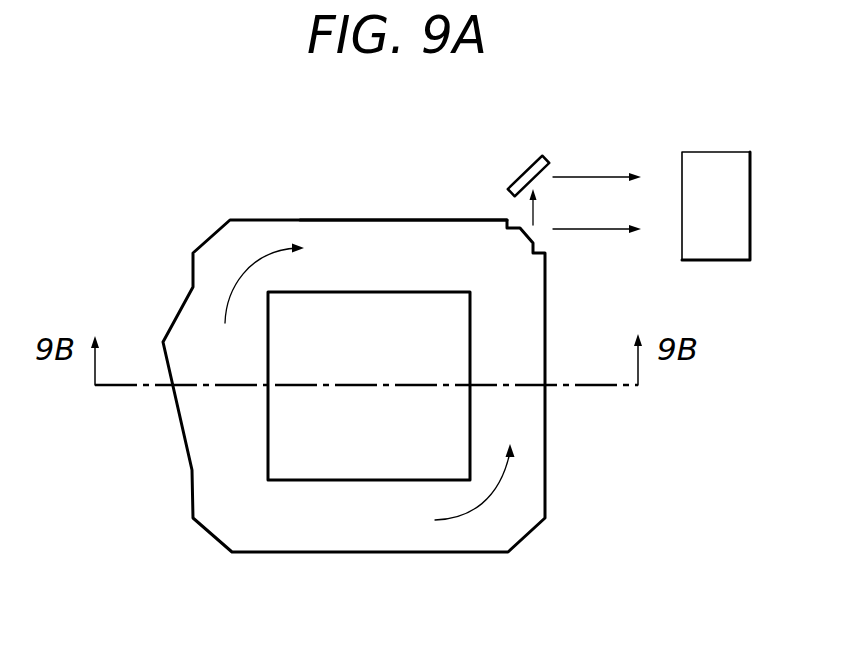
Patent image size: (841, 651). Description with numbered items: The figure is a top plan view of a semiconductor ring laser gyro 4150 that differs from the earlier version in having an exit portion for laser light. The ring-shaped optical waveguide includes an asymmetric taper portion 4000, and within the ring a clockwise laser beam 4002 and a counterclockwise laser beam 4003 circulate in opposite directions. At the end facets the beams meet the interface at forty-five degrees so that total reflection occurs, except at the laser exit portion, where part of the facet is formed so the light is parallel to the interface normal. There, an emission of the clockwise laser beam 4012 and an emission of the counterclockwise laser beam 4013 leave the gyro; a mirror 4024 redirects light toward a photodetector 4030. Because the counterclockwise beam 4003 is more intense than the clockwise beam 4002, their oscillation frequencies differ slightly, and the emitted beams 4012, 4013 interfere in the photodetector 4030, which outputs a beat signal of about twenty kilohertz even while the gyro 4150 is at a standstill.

The asymmetric taper portion 4000 is at (183, 327).
The clockwise laser beam 4002 is at (257, 252).
The counterclockwise laser beam 4003 is at (490, 507).
The semiconductor ring laser gyro 4150 is at (390, 230).
The mirror 4024 is at (528, 162).
The emission of a counterclockwise laser beam 4013 is at (595, 177).
The emission of a clockwise laser beam 4012 is at (595, 231).
The photodetector 4030 is at (713, 162).